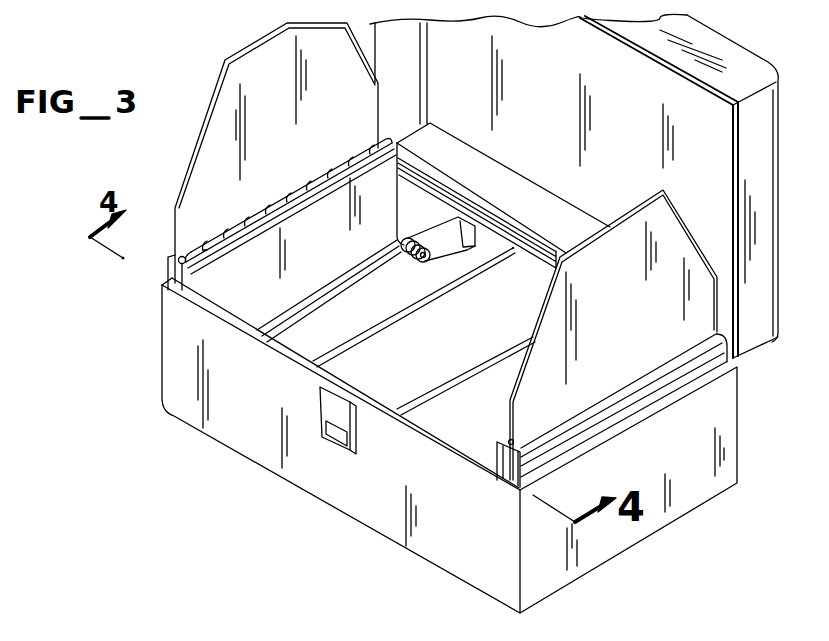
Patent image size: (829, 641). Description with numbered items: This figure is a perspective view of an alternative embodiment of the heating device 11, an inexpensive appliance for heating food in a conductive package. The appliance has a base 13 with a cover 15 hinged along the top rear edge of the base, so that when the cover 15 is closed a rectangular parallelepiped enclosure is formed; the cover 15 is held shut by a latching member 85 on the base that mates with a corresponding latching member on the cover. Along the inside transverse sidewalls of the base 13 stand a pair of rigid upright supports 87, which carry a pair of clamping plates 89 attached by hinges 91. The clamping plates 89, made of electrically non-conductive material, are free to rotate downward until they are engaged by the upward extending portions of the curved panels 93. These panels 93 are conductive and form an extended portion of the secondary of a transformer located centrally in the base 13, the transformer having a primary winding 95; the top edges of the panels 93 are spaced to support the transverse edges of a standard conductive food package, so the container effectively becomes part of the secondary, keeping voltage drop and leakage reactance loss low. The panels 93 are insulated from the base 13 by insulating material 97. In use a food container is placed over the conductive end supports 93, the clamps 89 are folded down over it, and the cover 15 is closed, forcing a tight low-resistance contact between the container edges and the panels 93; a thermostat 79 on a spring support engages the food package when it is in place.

The heating device 11 is at (600, 540).
The base 13 is at (460, 555).
The cover 15 is at (752, 333).
The thermostat 79 is at (421, 262).
The latching member 85 is at (356, 426).
The rigid upright supports 87 is at (165, 272).
The clamping plates 89 is at (210, 172).
The hinges 91 is at (186, 258).
The curved panels 93 is at (260, 289).
The primary winding 95 is at (436, 363).
The insulating material 97 is at (447, 233).